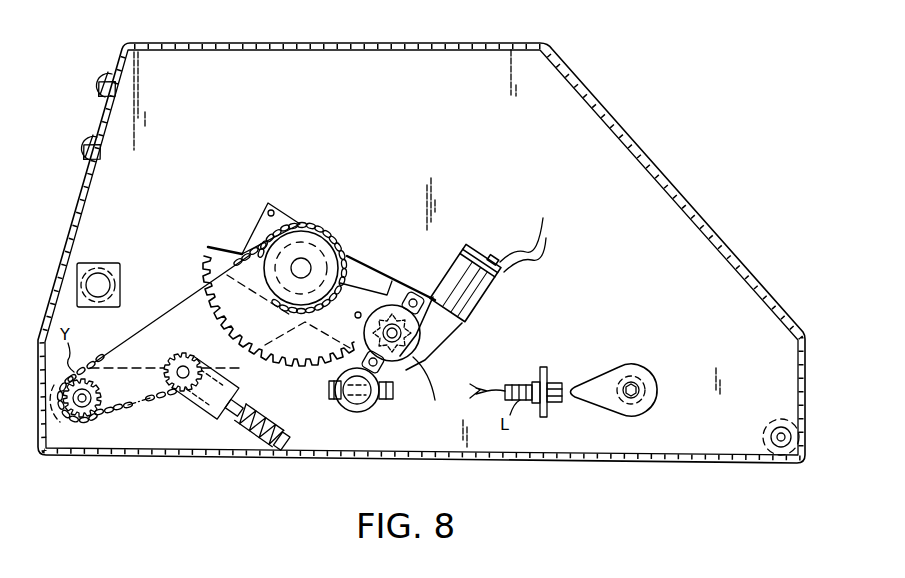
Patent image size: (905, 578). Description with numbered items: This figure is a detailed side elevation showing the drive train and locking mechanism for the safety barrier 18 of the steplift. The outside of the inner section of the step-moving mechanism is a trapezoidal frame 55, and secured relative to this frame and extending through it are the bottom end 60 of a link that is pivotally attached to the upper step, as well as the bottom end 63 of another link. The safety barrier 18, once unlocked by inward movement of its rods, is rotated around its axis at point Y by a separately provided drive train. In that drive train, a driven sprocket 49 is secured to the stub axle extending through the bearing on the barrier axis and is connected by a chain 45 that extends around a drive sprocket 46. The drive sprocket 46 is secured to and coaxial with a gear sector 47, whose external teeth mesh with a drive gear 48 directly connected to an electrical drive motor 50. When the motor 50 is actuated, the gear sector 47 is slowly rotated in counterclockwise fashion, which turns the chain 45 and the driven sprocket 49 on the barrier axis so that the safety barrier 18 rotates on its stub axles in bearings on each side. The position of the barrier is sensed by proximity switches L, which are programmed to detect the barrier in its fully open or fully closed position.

The safety barrier 18 is at (146, 366).
The chain 45 is at (181, 292).
The drive sprocket 46 is at (307, 252).
The gear sector 47 is at (369, 284).
The drive gear 48 is at (413, 358).
The driven sprocket 49 is at (100, 398).
The electrical drive motor 50 is at (473, 283).
The trapezoidal frame 55 is at (656, 150).
The bottom end of link 60 is at (778, 420).
The bottom end of link 63 is at (646, 375).